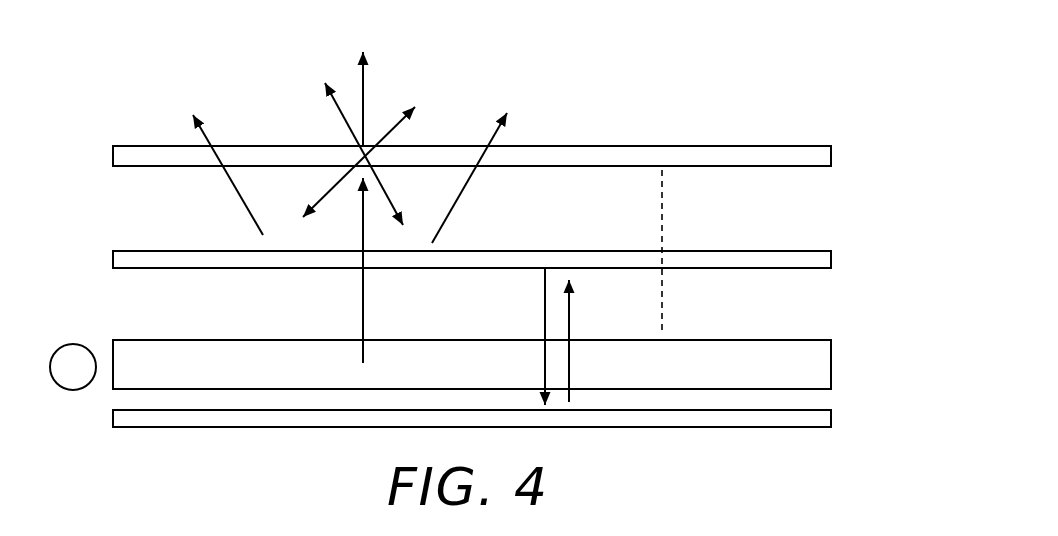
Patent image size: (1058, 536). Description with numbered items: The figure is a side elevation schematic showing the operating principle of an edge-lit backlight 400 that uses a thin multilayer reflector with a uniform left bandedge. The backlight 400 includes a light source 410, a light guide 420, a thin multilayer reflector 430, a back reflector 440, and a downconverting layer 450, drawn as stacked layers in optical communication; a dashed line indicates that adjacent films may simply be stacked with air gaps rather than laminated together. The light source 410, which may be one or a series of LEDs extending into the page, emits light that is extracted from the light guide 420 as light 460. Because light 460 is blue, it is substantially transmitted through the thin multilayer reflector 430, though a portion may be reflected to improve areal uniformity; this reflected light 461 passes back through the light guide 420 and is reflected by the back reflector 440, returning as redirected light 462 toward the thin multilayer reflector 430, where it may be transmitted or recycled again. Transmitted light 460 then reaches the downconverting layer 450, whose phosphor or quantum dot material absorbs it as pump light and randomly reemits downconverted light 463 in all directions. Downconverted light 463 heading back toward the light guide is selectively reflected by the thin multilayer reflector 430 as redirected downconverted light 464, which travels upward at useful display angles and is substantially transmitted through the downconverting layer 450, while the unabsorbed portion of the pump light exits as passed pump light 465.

The backlight 400 is at (790, 68).
The light source 410 is at (63, 345).
The light guide 420 is at (822, 360).
The thin multilayer reflector 430 is at (822, 255).
The back reflector 440 is at (822, 416).
The downconverting layer 450 is at (822, 153).
The light 460 is at (363, 294).
The reflected light 461 is at (545, 303).
The redirected light 462 is at (570, 305).
The downconverted light 463 is at (337, 106).
The redirected downconverted light 464 is at (200, 133).
The passed pump light 465 is at (364, 80).